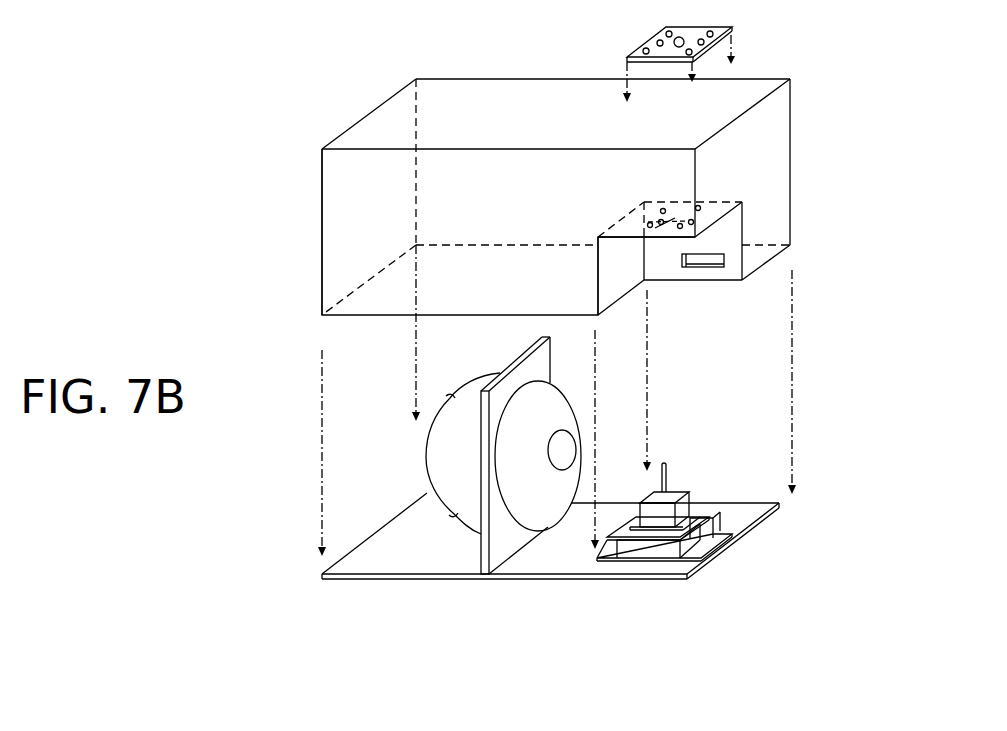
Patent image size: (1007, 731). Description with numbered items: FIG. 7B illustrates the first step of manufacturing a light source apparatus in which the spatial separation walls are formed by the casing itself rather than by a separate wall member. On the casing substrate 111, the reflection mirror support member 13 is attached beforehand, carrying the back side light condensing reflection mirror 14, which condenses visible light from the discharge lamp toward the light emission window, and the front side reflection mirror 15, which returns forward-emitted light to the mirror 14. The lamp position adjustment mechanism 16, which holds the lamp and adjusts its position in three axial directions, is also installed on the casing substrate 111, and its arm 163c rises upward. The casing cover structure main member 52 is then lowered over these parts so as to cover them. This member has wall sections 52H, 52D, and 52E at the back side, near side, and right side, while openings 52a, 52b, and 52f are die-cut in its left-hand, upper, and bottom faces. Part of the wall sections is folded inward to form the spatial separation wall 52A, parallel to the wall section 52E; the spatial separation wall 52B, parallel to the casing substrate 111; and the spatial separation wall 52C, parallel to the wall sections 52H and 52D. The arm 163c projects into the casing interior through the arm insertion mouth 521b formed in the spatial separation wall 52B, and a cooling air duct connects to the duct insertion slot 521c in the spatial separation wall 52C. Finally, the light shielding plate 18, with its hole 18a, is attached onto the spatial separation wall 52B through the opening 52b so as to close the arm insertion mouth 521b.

The casing cover structure main member 52 is at (567, 197).
The opening 52a is at (392, 199).
The opening 52b is at (562, 117).
The opening 52f is at (497, 290).
The spatial separation wall 52A is at (624, 280).
The spatial separation wall 52B is at (710, 206).
The spatial separation wall 52C is at (734, 283).
The wall section 52D is at (338, 257).
The wall section 52E is at (773, 170).
The wall section 52H is at (480, 163).
The arm insertion mouth 521b is at (666, 213).
The duct insertion slot 521c is at (700, 270).
The light shielding plate 18 is at (706, 31).
The large hole in cover plate 18a is at (682, 37).
The casing substrate 111 is at (449, 581).
The reflection mirror support member 13 is at (548, 366).
The back side light condensing reflection mirror 14 is at (570, 402).
The front side reflection mirror 15 is at (455, 514).
The lamp position adjustment mechanism 16 is at (690, 503).
The arm 163c is at (667, 469).